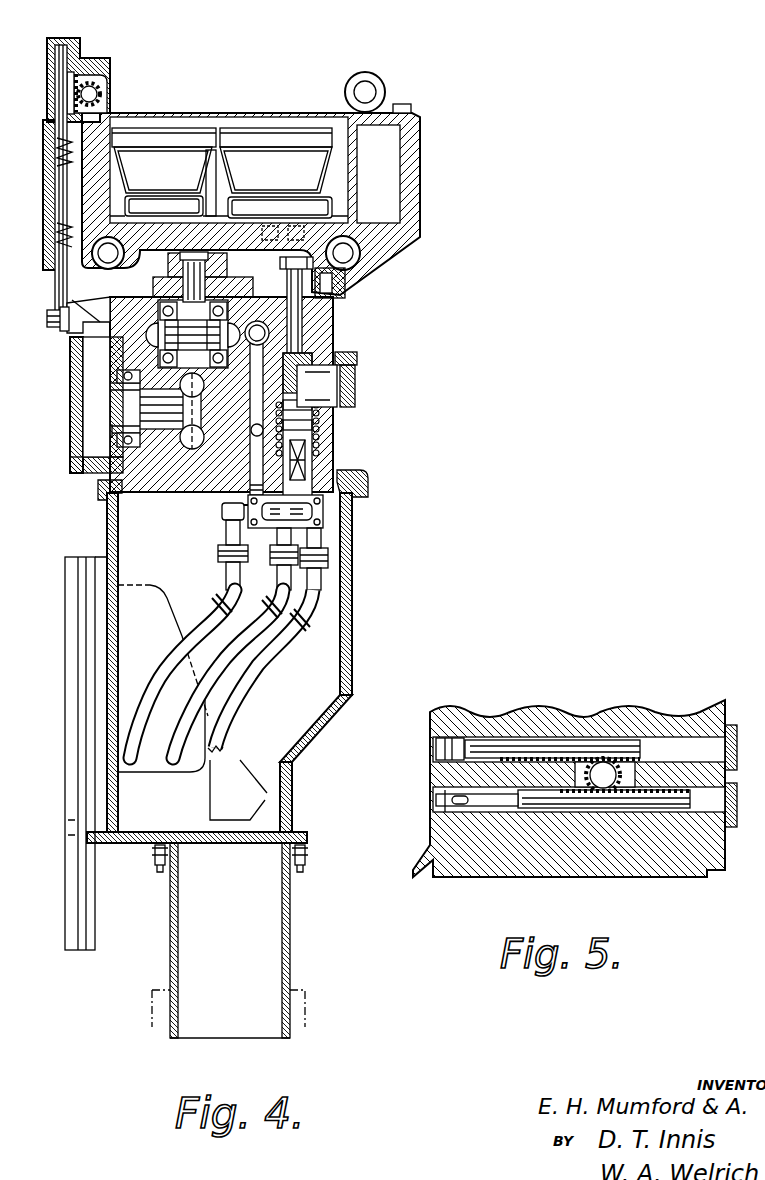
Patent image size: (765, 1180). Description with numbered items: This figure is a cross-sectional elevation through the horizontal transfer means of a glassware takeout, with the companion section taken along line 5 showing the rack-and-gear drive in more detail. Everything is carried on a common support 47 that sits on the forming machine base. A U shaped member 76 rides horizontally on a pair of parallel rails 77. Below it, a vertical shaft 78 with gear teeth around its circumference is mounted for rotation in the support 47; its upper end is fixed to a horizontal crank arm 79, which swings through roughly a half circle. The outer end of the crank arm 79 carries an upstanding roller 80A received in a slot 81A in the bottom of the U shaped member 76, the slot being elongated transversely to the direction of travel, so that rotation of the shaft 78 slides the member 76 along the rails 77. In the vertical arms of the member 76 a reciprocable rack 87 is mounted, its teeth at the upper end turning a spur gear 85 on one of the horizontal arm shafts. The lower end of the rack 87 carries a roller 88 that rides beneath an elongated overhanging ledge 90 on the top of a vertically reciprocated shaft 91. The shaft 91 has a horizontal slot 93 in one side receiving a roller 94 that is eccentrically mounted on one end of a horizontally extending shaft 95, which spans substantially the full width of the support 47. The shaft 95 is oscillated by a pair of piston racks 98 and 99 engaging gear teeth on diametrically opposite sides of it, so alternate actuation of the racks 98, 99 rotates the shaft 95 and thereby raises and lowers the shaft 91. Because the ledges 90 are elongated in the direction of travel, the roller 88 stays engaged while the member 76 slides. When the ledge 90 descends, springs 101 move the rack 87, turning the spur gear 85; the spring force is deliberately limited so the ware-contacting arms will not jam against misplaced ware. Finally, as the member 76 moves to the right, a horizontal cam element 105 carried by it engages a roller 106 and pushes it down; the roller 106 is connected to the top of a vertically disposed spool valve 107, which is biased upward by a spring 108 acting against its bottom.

In FIG. 4, the section line 5 is at (170, 352).
In FIG. 4, the common support 47 is at (338, 700).
In FIG. 5, the common support 47 is at (469, 878).
In FIG. 4, the U shaped member 76 is at (386, 250).
In FIG. 4, the parallel rails 77 is at (100, 253).
In FIG. 4, the vertical shaft 78 is at (112, 355).
In FIG. 4, the horizontal crank arm 79 is at (168, 290).
In FIG. 4, the upstanding roller 80A is at (270, 235).
In FIG. 4, the slot 81A is at (296, 235).
In FIG. 4, the spur gears 85 is at (88, 90).
In FIG. 4, the rack 87 is at (58, 95).
In FIG. 4, the roller 88 is at (62, 328).
In FIG. 4, the overhanging ledges 90 is at (68, 305).
In FIG. 4, the vertically reciprocated shaft 91 is at (90, 452).
In FIG. 4, the horizontal slot 93 is at (104, 425).
In FIG. 4, the roller 94 is at (104, 428).
In FIG. 4, the horizontally extending shaft 95 is at (150, 410).
In FIG. 5, the horizontally extending shaft 95 is at (606, 770).
In FIG. 5, the piston rack 98 is at (550, 745).
In FIG. 5, the piston rack 99 is at (593, 812).
In FIG. 4, the springs 101 is at (62, 165).
In FIG. 4, the horizontal cam element 105 is at (333, 300).
In FIG. 4, the roller 106 is at (350, 282).
In FIG. 4, the spool valve 107 is at (305, 328).
In FIG. 4, the spring 108 is at (300, 458).